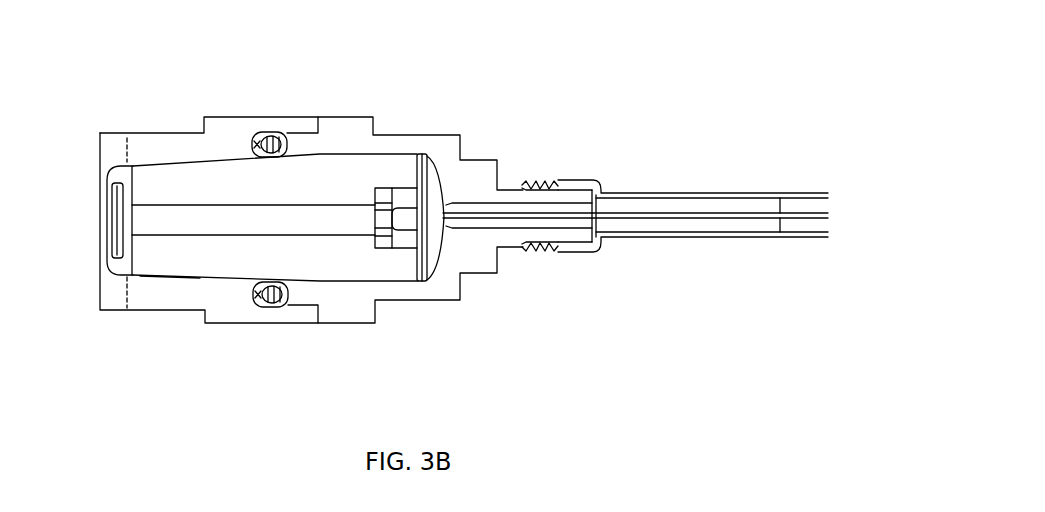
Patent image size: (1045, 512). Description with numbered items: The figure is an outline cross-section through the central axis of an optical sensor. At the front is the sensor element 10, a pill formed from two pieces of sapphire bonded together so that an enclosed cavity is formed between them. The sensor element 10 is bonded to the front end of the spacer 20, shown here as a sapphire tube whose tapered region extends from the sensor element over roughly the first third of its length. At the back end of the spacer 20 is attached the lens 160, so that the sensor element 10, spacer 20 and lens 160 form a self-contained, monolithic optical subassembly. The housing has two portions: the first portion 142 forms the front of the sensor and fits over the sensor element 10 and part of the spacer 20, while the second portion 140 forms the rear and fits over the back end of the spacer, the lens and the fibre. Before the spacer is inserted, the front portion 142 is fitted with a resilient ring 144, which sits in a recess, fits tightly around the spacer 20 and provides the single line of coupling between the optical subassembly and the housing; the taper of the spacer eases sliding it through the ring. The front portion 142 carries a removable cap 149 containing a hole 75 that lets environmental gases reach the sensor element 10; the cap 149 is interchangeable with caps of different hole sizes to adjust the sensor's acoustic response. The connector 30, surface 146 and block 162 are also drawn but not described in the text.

The sensor element 10 is at (120, 262).
The spacer 20 is at (223, 178).
The cable connector 30 is at (675, 215).
The hole 75 is at (105, 218).
The second portion of the housing 140 is at (407, 217).
The first portion of the housing 142 is at (183, 143).
The resilient ring 144 is at (272, 307).
The tapered outer surface 146 is at (160, 279).
The removable cap 149 is at (105, 136).
The lens 160 is at (431, 172).
The electrical contact block 162 is at (382, 205).